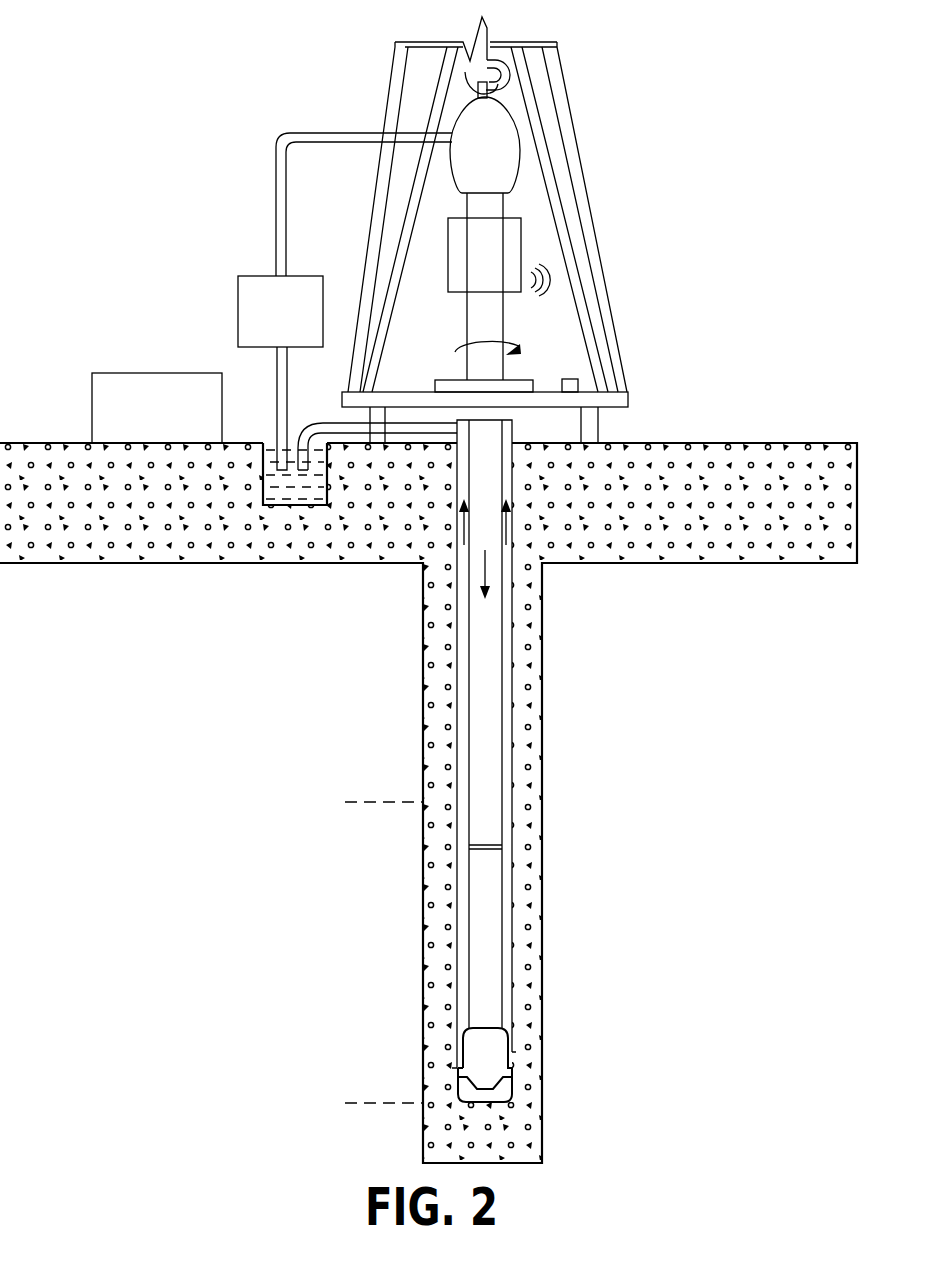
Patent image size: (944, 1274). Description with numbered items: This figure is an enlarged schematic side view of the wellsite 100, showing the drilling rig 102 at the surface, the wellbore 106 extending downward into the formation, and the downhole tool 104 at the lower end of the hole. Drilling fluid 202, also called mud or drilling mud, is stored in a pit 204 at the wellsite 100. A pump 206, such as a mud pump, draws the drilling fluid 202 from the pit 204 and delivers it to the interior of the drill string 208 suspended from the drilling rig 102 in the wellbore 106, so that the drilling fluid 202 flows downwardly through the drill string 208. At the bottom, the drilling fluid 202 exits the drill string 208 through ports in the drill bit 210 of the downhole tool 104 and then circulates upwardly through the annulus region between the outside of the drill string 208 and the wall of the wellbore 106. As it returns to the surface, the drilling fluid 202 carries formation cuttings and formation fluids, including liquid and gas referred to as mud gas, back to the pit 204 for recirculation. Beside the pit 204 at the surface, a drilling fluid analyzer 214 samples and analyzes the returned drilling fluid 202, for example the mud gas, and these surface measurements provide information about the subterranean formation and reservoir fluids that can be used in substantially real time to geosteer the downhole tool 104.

The wellsite 100 is at (110, 58).
The drilling rig 102 is at (610, 139).
The downhole tool 104 is at (345, 802).
The wellbore 106 is at (505, 438).
The drilling fluid 202 is at (292, 505).
The pit 204 is at (266, 436).
The pump 206 is at (262, 276).
The drill string 208 is at (470, 615).
The drill bit 210 is at (460, 1053).
The drilling fluid analyzer 214 is at (157, 373).